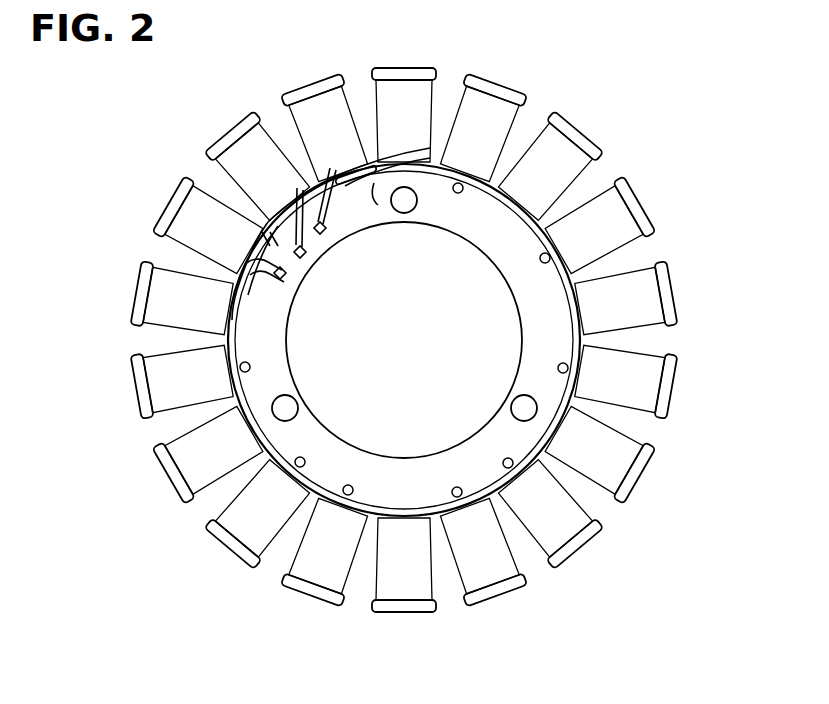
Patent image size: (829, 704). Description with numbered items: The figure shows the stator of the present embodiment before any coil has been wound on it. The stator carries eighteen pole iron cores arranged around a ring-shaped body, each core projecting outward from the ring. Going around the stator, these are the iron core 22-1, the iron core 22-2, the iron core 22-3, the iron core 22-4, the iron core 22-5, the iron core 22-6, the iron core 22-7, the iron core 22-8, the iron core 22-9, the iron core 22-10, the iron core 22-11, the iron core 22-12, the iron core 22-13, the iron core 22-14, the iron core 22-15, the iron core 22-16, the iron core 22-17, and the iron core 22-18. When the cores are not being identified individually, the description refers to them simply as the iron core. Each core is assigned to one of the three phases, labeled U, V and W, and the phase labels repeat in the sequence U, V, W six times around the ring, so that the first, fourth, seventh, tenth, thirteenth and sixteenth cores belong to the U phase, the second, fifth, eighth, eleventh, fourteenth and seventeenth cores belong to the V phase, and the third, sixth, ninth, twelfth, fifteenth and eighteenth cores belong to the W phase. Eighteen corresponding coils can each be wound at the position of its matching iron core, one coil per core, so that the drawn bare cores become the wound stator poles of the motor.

The iron core 22-1 is at (232, 135).
The iron core 22-2 is at (308, 88).
The iron core 22-3 is at (432, 68).
The iron core 22-4 is at (512, 93).
The iron core 22-5 is at (585, 130).
The iron core 22-6 is at (633, 200).
The iron core 22-7 is at (664, 286).
The iron core 22-8 is at (664, 378).
The iron core 22-9 is at (634, 458).
The iron core 22-10 is at (590, 538).
The iron core 22-11 is at (497, 590).
The iron core 22-12 is at (413, 607).
The iron core 22-13 is at (312, 588).
The iron core 22-14 is at (232, 540).
The iron core 22-15 is at (172, 472).
The iron core 22-16 is at (140, 386).
The iron core 22-17 is at (140, 293).
The iron core 22-18 is at (177, 197).